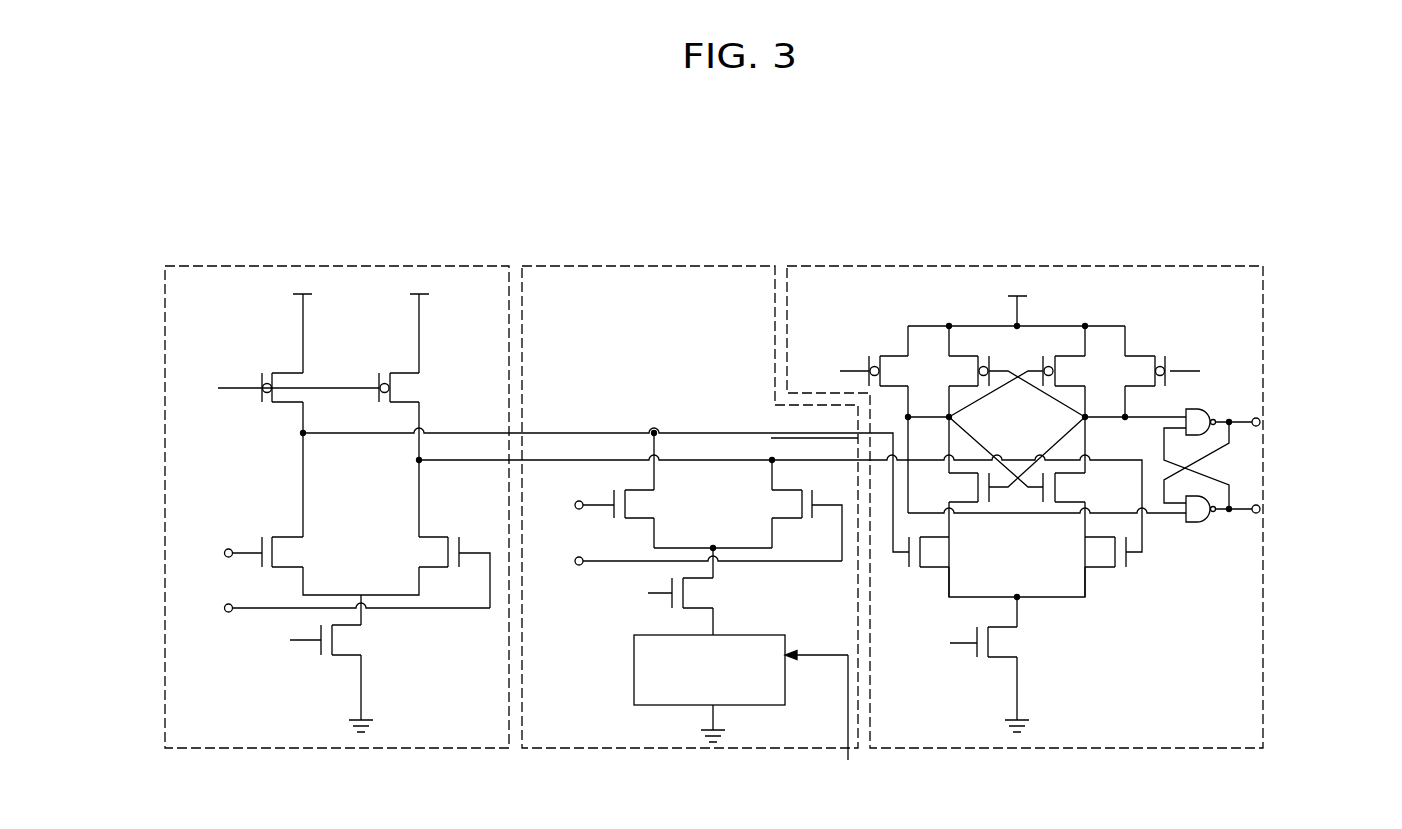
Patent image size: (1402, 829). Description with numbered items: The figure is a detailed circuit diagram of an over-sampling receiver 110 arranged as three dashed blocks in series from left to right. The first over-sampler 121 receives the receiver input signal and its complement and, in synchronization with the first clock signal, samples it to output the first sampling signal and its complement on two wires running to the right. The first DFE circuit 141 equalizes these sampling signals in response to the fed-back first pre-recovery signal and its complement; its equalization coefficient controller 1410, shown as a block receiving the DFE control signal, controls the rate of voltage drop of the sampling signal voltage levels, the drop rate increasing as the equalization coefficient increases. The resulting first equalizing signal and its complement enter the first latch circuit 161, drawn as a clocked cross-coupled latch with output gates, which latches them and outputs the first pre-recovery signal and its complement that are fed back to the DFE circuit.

The over-sampling receiver 110 is at (758, 196).
The first over-sampler 121 is at (335, 262).
The first DFE circuit 141 is at (646, 262).
The first latch circuit 161 is at (1024, 262).
The equalization coefficient controller 1410 is at (634, 660).